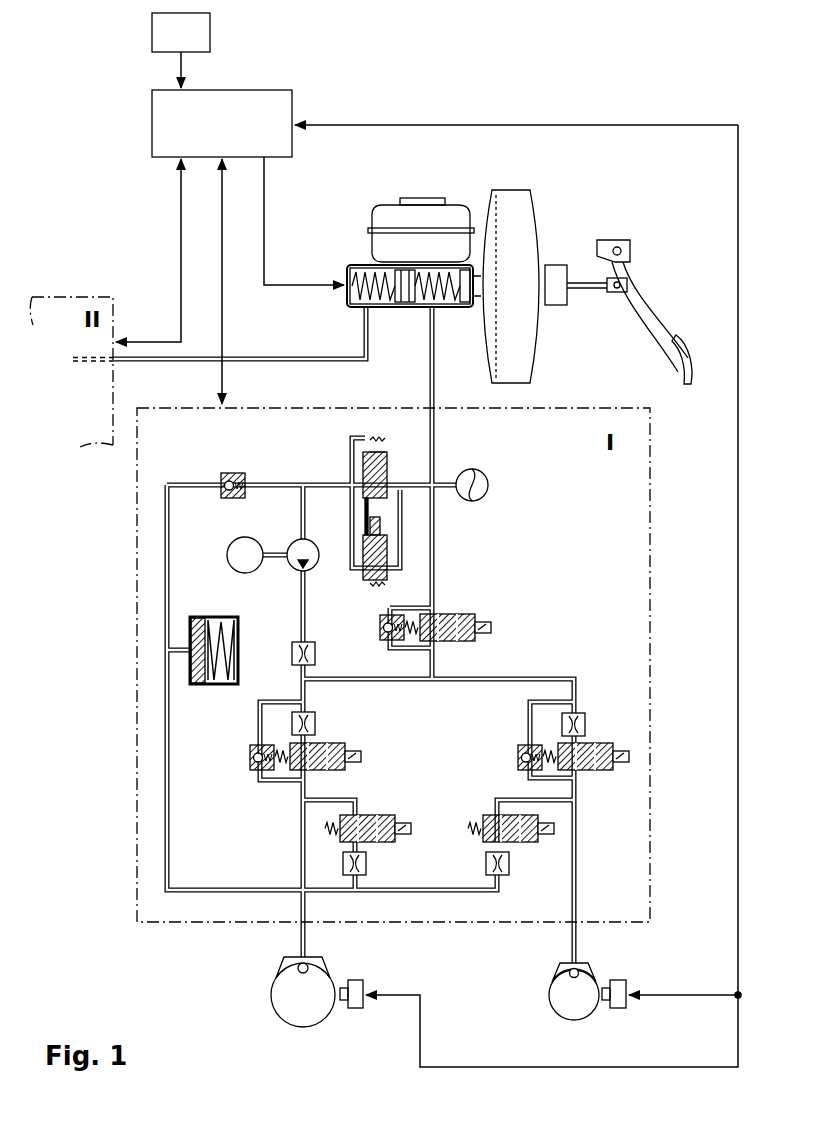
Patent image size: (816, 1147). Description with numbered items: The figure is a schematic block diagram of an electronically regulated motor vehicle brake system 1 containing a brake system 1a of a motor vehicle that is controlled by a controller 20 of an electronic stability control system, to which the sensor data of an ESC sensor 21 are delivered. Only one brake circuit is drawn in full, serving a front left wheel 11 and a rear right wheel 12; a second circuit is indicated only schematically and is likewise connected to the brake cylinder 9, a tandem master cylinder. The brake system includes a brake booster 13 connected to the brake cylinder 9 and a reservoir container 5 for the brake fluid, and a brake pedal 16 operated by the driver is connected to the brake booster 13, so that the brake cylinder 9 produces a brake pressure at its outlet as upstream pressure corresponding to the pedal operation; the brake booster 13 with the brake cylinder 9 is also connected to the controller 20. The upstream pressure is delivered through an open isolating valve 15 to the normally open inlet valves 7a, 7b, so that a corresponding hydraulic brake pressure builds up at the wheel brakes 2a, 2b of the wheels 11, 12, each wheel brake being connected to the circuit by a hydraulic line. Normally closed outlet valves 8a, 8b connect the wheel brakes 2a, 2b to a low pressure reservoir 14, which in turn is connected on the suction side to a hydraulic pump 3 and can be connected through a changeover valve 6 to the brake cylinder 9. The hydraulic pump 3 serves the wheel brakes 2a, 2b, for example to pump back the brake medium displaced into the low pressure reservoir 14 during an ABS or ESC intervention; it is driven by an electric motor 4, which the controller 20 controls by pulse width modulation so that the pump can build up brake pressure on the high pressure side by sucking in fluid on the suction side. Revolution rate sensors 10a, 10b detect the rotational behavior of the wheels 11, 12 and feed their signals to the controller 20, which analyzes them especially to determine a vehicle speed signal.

The electronically regulated motor vehicle brake system 1 is at (567, 80).
The brake system 1a is at (144, 295).
The wheel brake 2a is at (292, 970).
The wheel brake 2b is at (560, 973).
The hydraulic pump 3 is at (318, 560).
The electric motor 4 is at (255, 572).
The reservoir container 5 is at (392, 218).
The changeover valve 6 is at (365, 468).
The inlet valve 7a is at (333, 745).
The inlet valve 7b is at (605, 743).
The outlet valve 8a is at (387, 815).
The outlet valve 8b is at (530, 842).
The brake cylinder 9 is at (455, 308).
The revolution rate sensor 10a is at (353, 1008).
The revolution rate sensor 10b is at (620, 1008).
The front left wheel 11 is at (283, 995).
The rear right wheel 12 is at (553, 998).
The brake booster 13 is at (517, 222).
The low pressure reservoir 14 is at (218, 685).
The isolating valve 15 is at (460, 612).
The brake pedal 16 is at (640, 312).
The controller 20 is at (170, 125).
The ESC sensor 21 is at (172, 33).